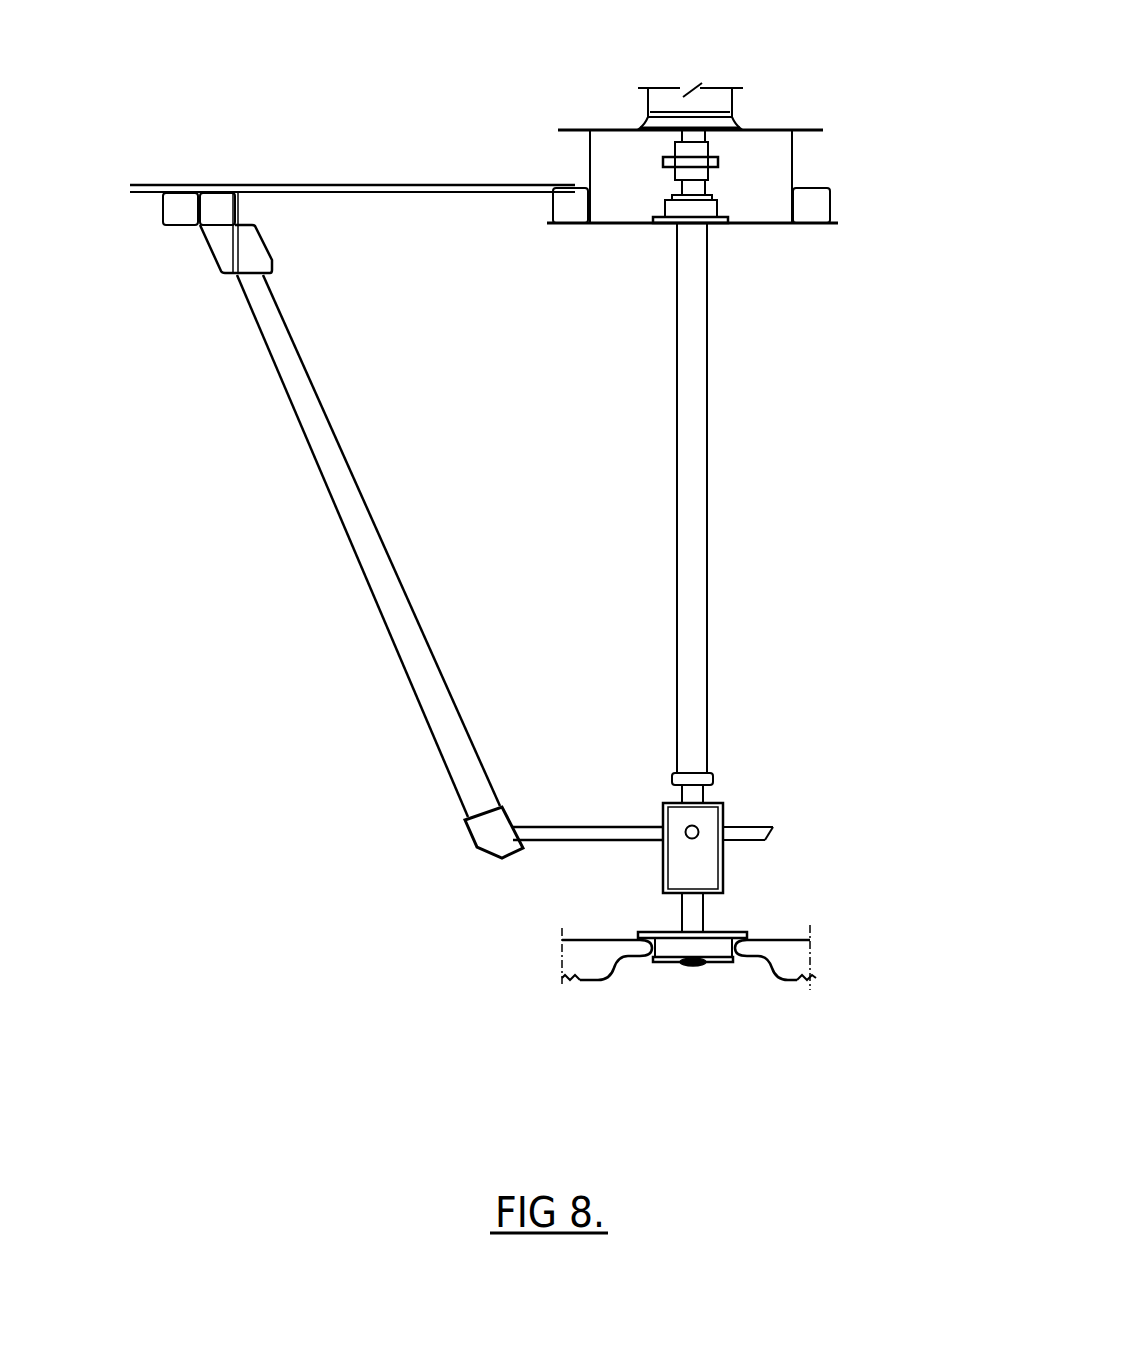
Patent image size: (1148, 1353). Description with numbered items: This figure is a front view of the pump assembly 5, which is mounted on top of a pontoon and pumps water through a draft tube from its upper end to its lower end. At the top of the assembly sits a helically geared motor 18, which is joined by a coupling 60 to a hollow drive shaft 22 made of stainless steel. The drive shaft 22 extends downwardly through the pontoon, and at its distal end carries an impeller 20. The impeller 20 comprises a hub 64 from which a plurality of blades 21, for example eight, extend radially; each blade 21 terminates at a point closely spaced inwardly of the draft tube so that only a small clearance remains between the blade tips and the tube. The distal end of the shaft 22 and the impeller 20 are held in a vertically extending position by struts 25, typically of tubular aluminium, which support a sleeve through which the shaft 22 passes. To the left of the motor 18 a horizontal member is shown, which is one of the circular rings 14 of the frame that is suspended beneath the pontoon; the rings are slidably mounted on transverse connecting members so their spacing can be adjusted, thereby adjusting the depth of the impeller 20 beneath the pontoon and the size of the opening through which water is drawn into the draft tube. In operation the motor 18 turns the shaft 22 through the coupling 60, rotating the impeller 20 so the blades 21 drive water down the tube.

The pump assembly 5 is at (415, 137).
The circular ring 14 is at (162, 185).
The helically geared motor 18 is at (725, 100).
The coupling 60 is at (708, 172).
The hollow drive shaft 22 is at (697, 460).
The strut 25 is at (312, 430).
The impeller 20 is at (685, 972).
The hub 64 is at (725, 950).
The blade 21 is at (587, 975).